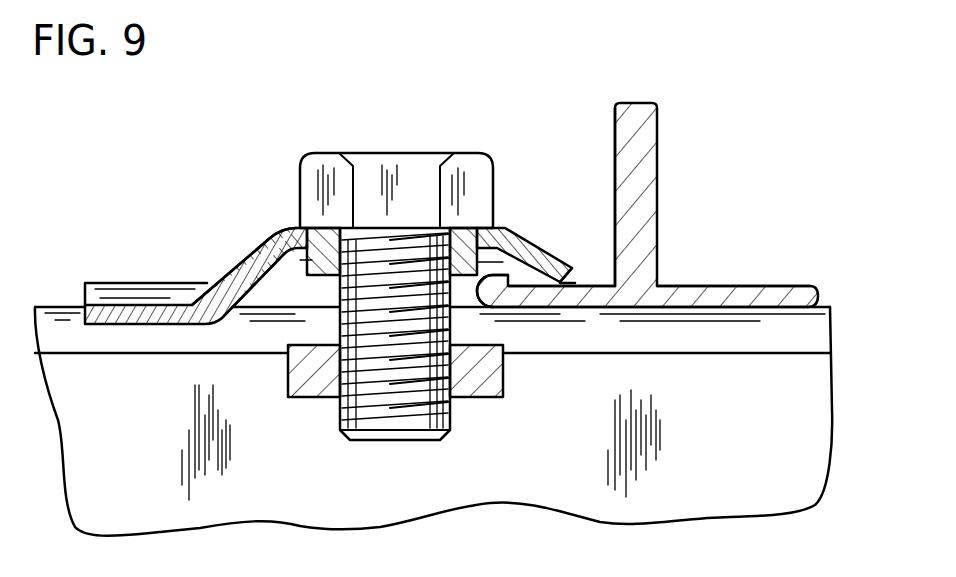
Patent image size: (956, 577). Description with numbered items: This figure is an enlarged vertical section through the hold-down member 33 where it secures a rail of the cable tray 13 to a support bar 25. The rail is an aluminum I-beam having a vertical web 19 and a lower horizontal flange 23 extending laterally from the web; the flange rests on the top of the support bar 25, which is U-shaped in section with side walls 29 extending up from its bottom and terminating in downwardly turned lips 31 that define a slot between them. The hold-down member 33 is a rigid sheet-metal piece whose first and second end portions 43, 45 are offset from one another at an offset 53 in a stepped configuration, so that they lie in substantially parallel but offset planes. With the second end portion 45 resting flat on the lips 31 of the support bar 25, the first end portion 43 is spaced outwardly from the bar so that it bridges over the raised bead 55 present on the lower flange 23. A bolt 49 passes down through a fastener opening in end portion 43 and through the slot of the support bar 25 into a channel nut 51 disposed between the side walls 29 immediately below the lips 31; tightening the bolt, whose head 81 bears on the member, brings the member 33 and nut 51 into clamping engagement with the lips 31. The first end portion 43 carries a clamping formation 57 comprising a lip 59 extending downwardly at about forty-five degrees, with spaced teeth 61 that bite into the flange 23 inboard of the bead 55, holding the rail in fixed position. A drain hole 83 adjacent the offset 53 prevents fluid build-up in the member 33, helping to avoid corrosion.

The cable tray 13 is at (615, 143).
The vertical web 19 is at (657, 165).
The lower horizontal flange 23 is at (738, 393).
The support bar 25 is at (824, 306).
The side wall 29 is at (758, 495).
The downwardly turned lip 31 is at (147, 342).
The hold-down member 33 is at (345, 254).
The first end portion 43 is at (519, 230).
The second end portion 45 is at (122, 283).
The bolt 49 is at (388, 430).
The channel nut 51 is at (313, 383).
The offset 53 is at (257, 297).
The bead 55 is at (500, 294).
The clamping formation 57 is at (553, 251).
The lip 59 is at (567, 283).
The tooth 61 is at (574, 284).
The head 81 is at (368, 153).
The drain hole 83 is at (274, 236).